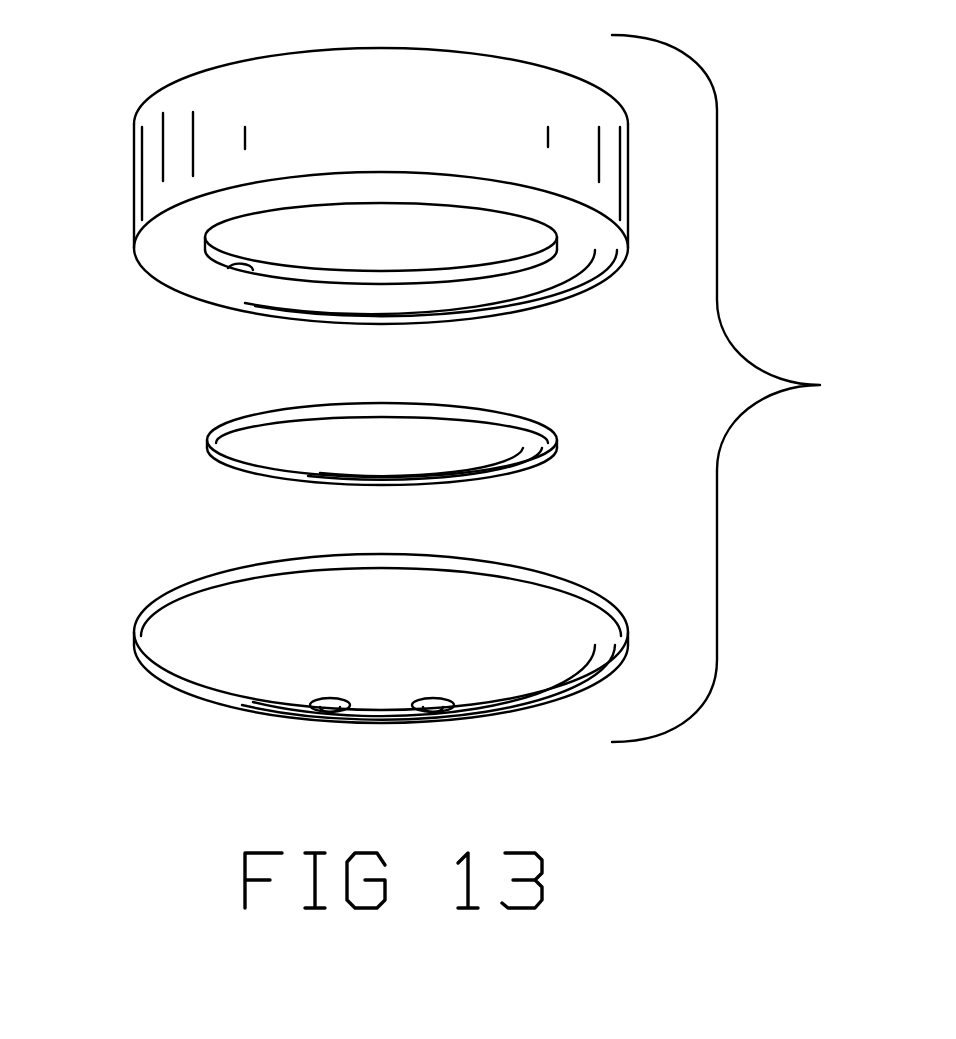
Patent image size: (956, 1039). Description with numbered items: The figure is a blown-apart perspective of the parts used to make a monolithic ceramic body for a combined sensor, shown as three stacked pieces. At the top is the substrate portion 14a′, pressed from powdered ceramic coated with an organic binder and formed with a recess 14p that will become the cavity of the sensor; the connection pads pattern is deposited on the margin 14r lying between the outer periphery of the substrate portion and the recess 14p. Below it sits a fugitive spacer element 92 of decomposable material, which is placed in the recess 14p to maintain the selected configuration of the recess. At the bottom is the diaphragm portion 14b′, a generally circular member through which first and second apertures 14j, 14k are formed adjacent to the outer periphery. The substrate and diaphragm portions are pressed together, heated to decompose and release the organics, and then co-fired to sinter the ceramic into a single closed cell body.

The substrate portion 14a′ is at (178, 148).
The recess 14p is at (228, 266).
The margin 14r is at (567, 265).
The fugitive spacer element 92 is at (252, 457).
The diaphragm portion 14b′ is at (202, 622).
The first aperture 14j is at (317, 713).
The second aperture 14k is at (455, 712).